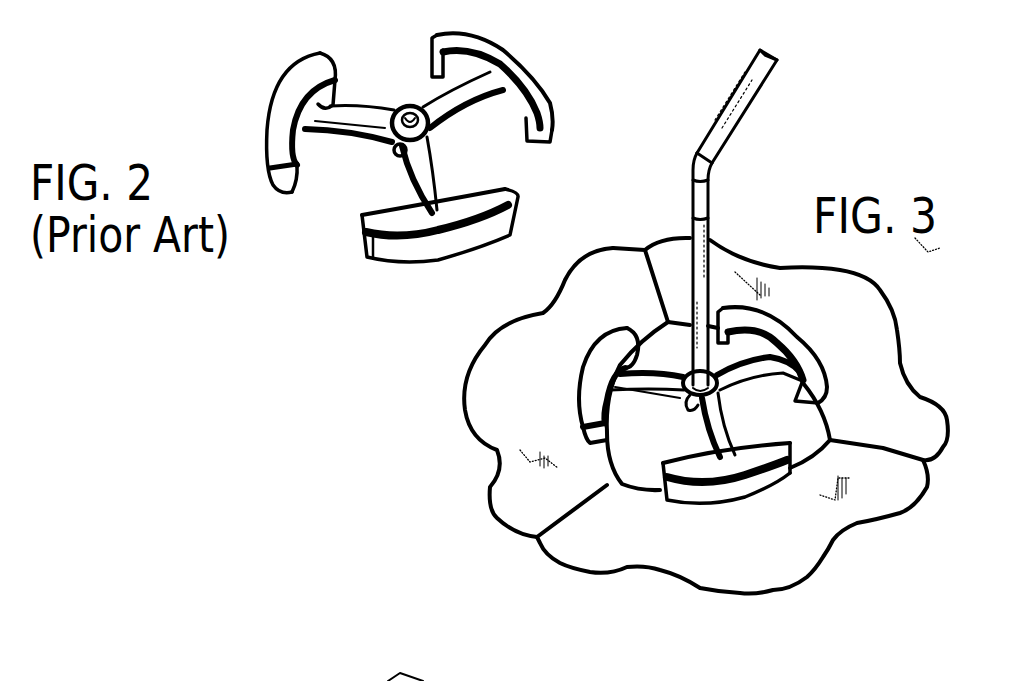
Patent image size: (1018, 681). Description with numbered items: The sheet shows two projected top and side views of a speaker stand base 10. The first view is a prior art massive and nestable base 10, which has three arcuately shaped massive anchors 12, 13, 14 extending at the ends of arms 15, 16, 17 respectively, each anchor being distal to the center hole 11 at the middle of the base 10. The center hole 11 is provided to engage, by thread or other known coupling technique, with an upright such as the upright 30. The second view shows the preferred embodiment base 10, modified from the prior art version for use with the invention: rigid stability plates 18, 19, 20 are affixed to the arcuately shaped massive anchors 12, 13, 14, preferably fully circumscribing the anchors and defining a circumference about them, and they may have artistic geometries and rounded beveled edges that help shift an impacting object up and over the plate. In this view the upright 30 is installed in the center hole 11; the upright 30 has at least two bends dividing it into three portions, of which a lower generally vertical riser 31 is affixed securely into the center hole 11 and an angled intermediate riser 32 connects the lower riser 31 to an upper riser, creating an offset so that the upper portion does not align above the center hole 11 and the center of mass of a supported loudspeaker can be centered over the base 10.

In FIG. 2, the base 10 is at (293, 58).
In FIG. 3, the base 10 is at (475, 463).
In FIG. 2, the center hole 11 is at (417, 122).
In FIG. 2, the arcuately shaped massive anchor 12 is at (432, 104).
In FIG. 3, the arcuately shaped massive anchor 12 is at (785, 335).
In FIG. 2, the arcuately shaped massive anchor 13 is at (437, 203).
In FIG. 3, the arcuately shaped massive anchor 13 is at (723, 493).
In FIG. 2, the arcuately shaped massive anchor 14 is at (357, 128).
In FIG. 3, the arcuately shaped massive anchor 14 is at (598, 437).
In FIG. 2, the arm 15 is at (287, 108).
In FIG. 3, the arm 15 is at (817, 360).
In FIG. 2, the arm 16 is at (530, 101).
In FIG. 3, the arm 16 is at (750, 472).
In FIG. 2, the arm 17 is at (383, 224).
In FIG. 3, the arm 17 is at (641, 392).
In FIG. 3, the stability plate 18 is at (873, 394).
In FIG. 3, the stability plate 19 is at (707, 557).
In FIG. 3, the stability plate 20 is at (543, 416).
In FIG. 3, the upright 30 is at (772, 58).
In FIG. 3, the lower generally vertical riser 31 is at (698, 193).
In FIG. 3, the angled intermediate riser 32 is at (728, 110).